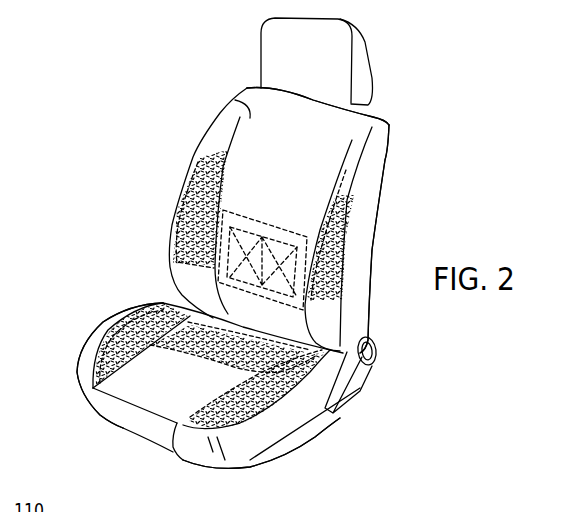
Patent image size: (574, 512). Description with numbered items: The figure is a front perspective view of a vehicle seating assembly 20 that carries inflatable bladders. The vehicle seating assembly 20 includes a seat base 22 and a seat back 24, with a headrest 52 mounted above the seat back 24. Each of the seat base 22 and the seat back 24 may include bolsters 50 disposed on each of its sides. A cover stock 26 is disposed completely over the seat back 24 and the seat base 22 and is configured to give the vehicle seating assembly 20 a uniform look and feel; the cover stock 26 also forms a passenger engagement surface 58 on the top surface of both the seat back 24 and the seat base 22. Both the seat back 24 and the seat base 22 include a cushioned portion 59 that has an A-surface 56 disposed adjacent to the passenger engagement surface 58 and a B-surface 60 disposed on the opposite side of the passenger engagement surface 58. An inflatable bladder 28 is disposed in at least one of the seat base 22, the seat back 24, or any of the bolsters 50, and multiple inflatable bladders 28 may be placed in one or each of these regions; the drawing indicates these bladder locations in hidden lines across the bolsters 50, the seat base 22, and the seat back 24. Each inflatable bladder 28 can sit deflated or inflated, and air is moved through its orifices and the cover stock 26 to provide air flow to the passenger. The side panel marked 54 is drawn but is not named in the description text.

The vehicle seating assembly 20 is at (435, 57).
The seat base 22 is at (173, 452).
The seat back 24 is at (310, 143).
The cover stock 26 is at (238, 97).
The inflatable bladder 28 is at (68, 308).
The bolsters 50 is at (220, 142).
The headrest 52 is at (330, 52).
The seat cushion side panel 54 is at (127, 415).
The A-surface 56 is at (230, 118).
The passenger engagement surface 58 is at (275, 207).
The cushioned portion 59 is at (350, 165).
The B-surface 60 is at (372, 300).